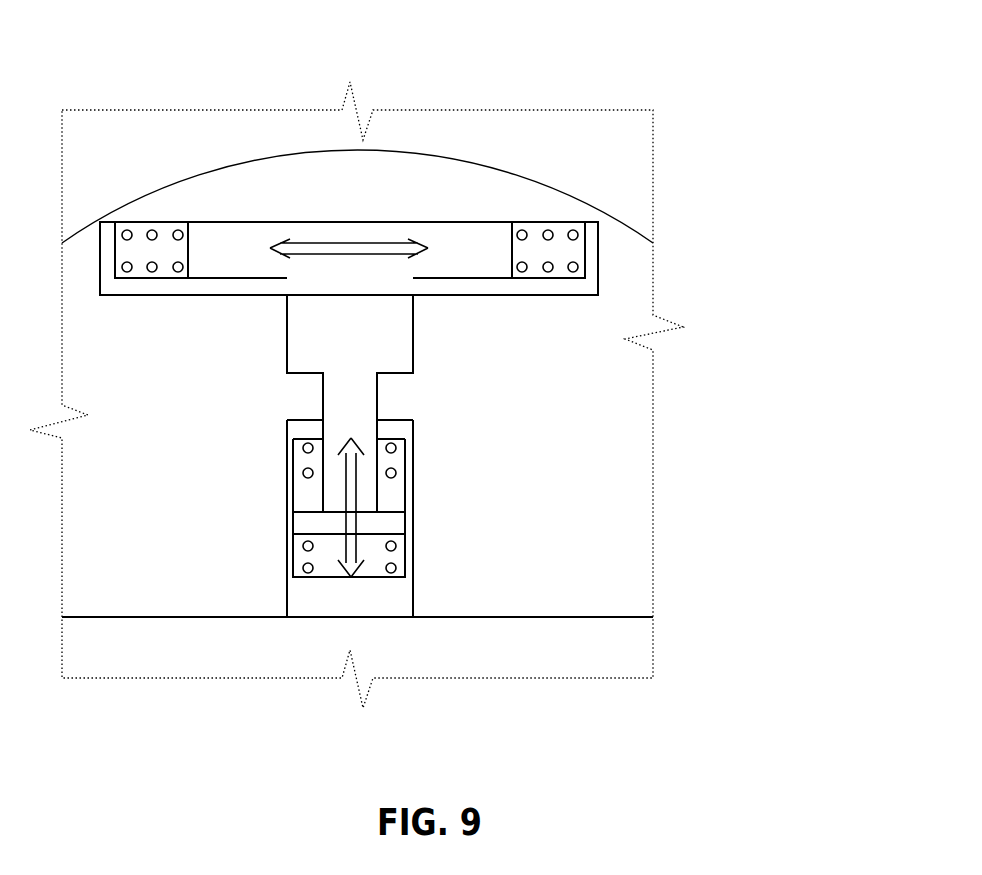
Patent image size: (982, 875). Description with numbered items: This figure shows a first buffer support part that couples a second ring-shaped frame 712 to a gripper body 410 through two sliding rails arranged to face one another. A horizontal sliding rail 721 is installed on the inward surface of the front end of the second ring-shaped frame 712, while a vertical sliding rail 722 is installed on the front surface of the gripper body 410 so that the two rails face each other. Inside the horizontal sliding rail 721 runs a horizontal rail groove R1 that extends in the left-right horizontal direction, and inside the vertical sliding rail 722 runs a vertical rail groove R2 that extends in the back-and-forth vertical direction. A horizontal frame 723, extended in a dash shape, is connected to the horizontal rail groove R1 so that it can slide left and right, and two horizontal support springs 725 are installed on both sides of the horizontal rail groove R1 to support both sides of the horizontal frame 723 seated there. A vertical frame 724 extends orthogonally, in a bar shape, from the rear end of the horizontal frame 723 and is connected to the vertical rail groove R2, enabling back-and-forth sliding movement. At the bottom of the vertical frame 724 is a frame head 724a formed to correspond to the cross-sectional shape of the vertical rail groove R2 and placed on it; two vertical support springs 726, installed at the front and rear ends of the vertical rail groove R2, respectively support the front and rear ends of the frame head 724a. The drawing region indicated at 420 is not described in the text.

The support structure 420 is at (98, 41).
The gripper body 410 is at (148, 625).
The second ring-shaped frame 712 is at (650, 167).
The horizontal sliding rail 721 is at (593, 247).
The horizontal frame 723 is at (500, 256).
The horizontal support springs 725 is at (573, 268).
The vertical frame 724 is at (407, 338).
The vertical sliding rail 722 is at (405, 455).
The frame head 724a is at (405, 530).
The vertical support springs 726 is at (391, 475).
The horizontal rail groove R1 is at (488, 255).
The vertical rail groove R2 is at (330, 572).